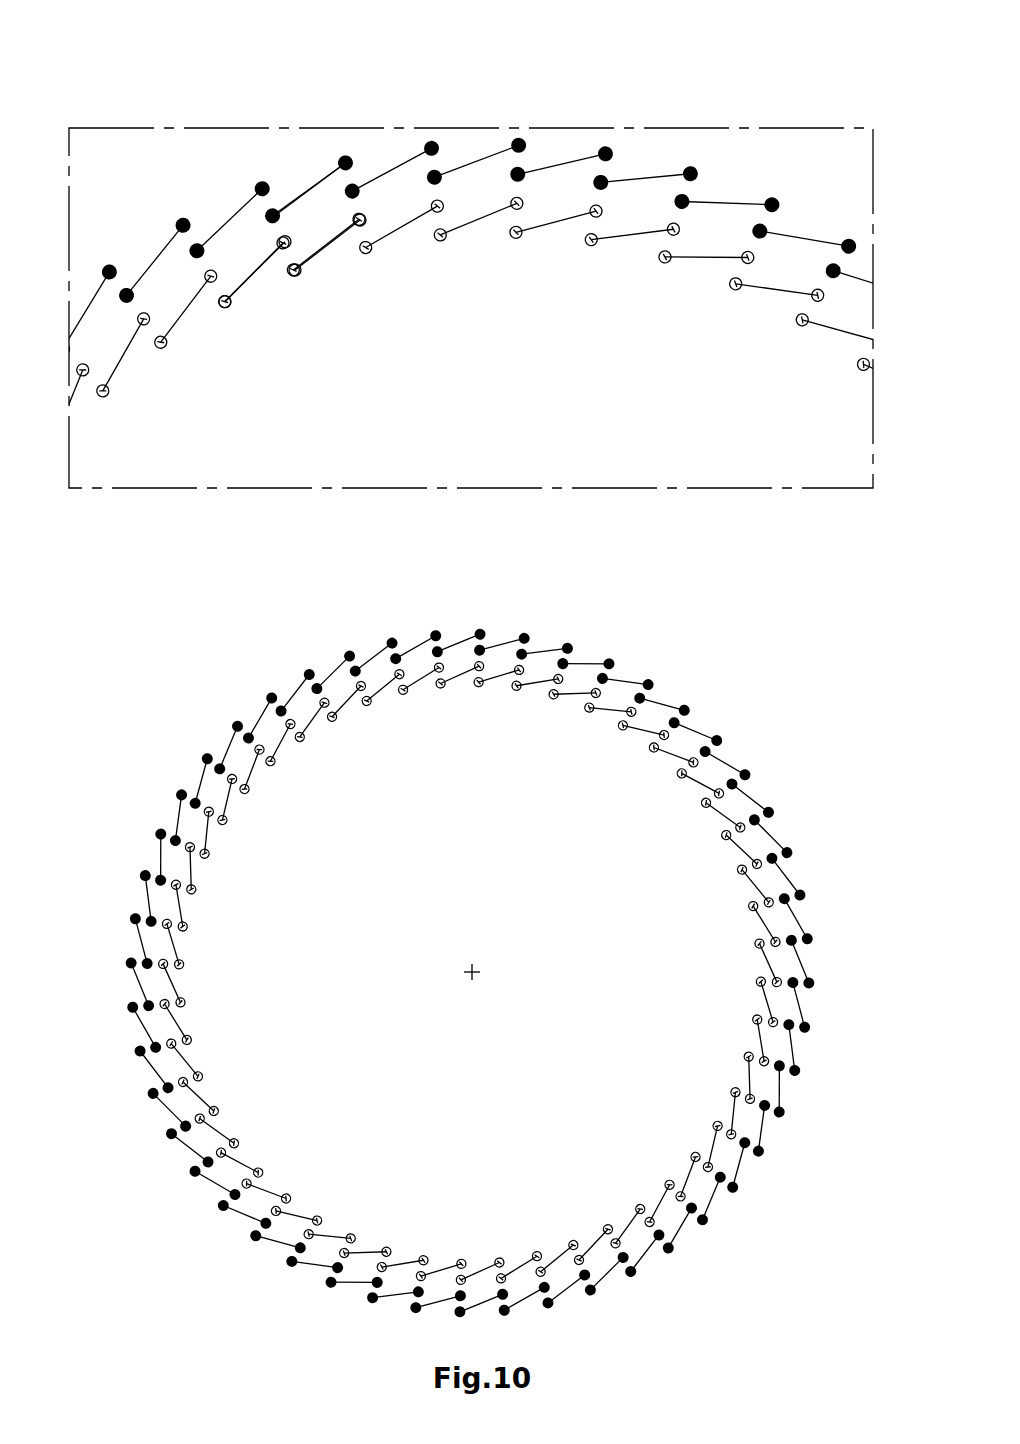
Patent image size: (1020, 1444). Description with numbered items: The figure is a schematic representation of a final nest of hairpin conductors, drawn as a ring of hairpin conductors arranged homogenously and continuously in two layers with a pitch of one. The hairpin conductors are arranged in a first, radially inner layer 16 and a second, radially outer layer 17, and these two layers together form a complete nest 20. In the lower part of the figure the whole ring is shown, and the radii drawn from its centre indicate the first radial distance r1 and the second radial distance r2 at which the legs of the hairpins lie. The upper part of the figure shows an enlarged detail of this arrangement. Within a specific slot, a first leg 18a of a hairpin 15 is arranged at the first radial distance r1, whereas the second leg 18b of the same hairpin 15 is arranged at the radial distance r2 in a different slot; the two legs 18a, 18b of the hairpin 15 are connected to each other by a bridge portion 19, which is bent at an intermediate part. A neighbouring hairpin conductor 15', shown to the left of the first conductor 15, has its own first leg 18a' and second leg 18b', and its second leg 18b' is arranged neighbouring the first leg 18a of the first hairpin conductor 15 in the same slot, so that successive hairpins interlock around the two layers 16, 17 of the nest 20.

The hairpin conductor 15 is at (309, 122).
The neighbouring hairpin conductor 15' is at (211, 412).
The radially inner layer 16 is at (883, 298).
The radially outer layer 17 is at (883, 233).
The first leg 18a is at (265, 427).
The second leg 18b is at (390, 402).
The first leg of neighbouring hairpin conductor 18a' is at (183, 175).
The second leg of neighbouring hairpin conductor 18b' is at (262, 145).
The bridge portion 19 is at (332, 243).
The nest 20 is at (806, 818).
The first radial distance r1 is at (470, 973).
The second radial distance r2 is at (470, 973).